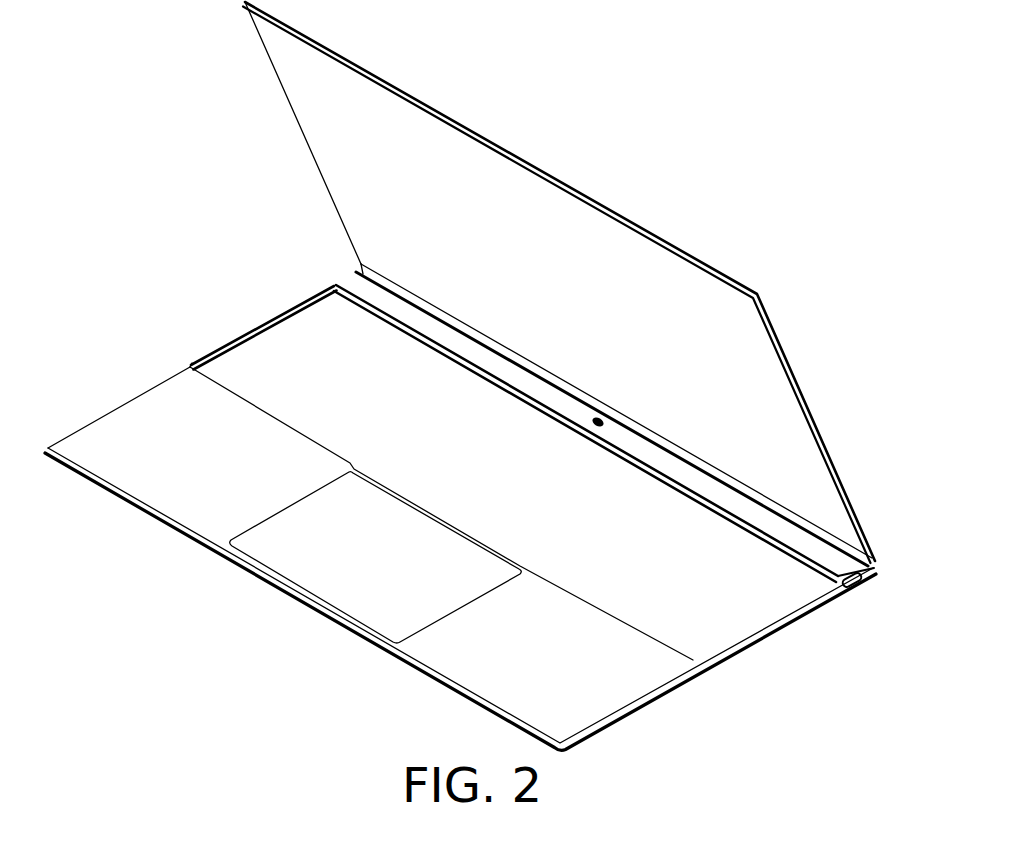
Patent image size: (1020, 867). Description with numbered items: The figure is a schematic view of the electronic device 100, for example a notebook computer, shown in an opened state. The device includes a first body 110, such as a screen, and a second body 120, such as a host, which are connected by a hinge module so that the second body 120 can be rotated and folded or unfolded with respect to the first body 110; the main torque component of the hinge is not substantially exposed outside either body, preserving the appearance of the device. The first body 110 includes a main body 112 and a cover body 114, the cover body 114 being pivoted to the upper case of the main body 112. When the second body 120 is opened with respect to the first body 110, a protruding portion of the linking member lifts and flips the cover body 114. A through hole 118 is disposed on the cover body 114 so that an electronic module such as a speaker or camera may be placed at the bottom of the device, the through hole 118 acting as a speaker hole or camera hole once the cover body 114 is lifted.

The electronic device 100 is at (101, 148).
The first body 110 is at (460, 461).
The main body 112 is at (258, 360).
The cover body 114 is at (364, 289).
The through hole 118 is at (610, 431).
The second body 120 is at (805, 381).